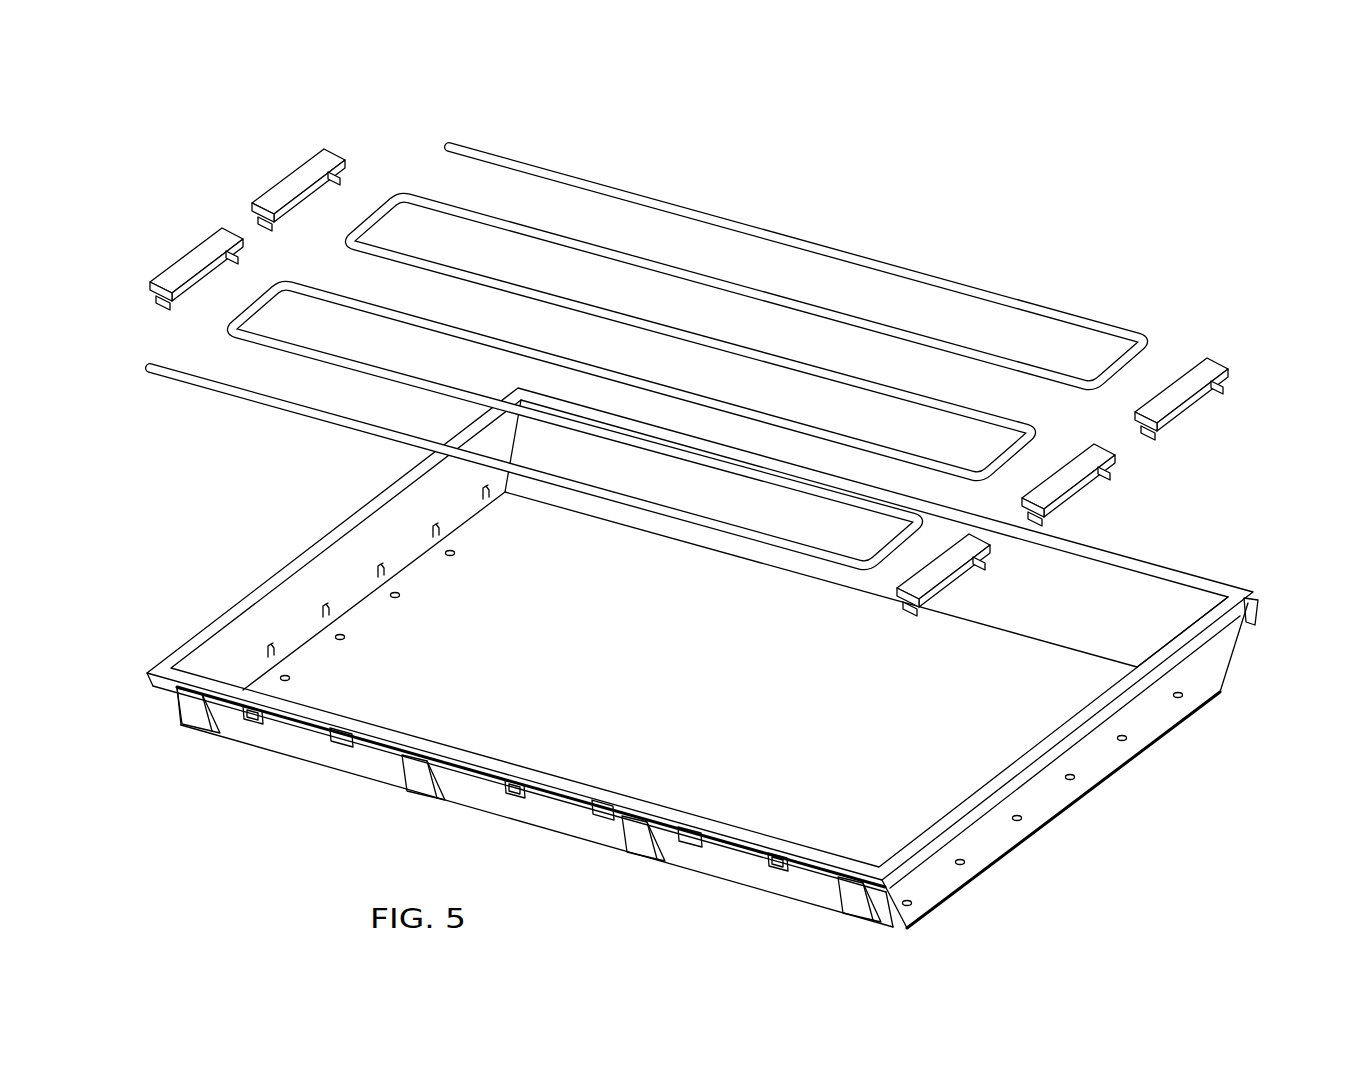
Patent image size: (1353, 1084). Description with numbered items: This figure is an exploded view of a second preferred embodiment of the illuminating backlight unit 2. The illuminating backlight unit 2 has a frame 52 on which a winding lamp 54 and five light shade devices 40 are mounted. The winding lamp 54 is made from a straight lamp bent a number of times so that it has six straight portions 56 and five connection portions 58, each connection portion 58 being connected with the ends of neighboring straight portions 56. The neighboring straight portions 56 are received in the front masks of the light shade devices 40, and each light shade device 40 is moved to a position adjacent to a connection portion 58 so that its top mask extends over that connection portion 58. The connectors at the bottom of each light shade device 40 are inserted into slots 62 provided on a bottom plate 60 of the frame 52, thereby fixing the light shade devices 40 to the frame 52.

The illuminating backlight unit 2 is at (1088, 255).
The light shade device 40 is at (290, 140).
The frame 52 is at (722, 674).
The winding lamp 54 is at (643, 353).
The straight portion 56 is at (643, 353).
The connection portion 58 is at (367, 203).
The bottom plate 60 is at (472, 727).
The slot 62 is at (455, 553).